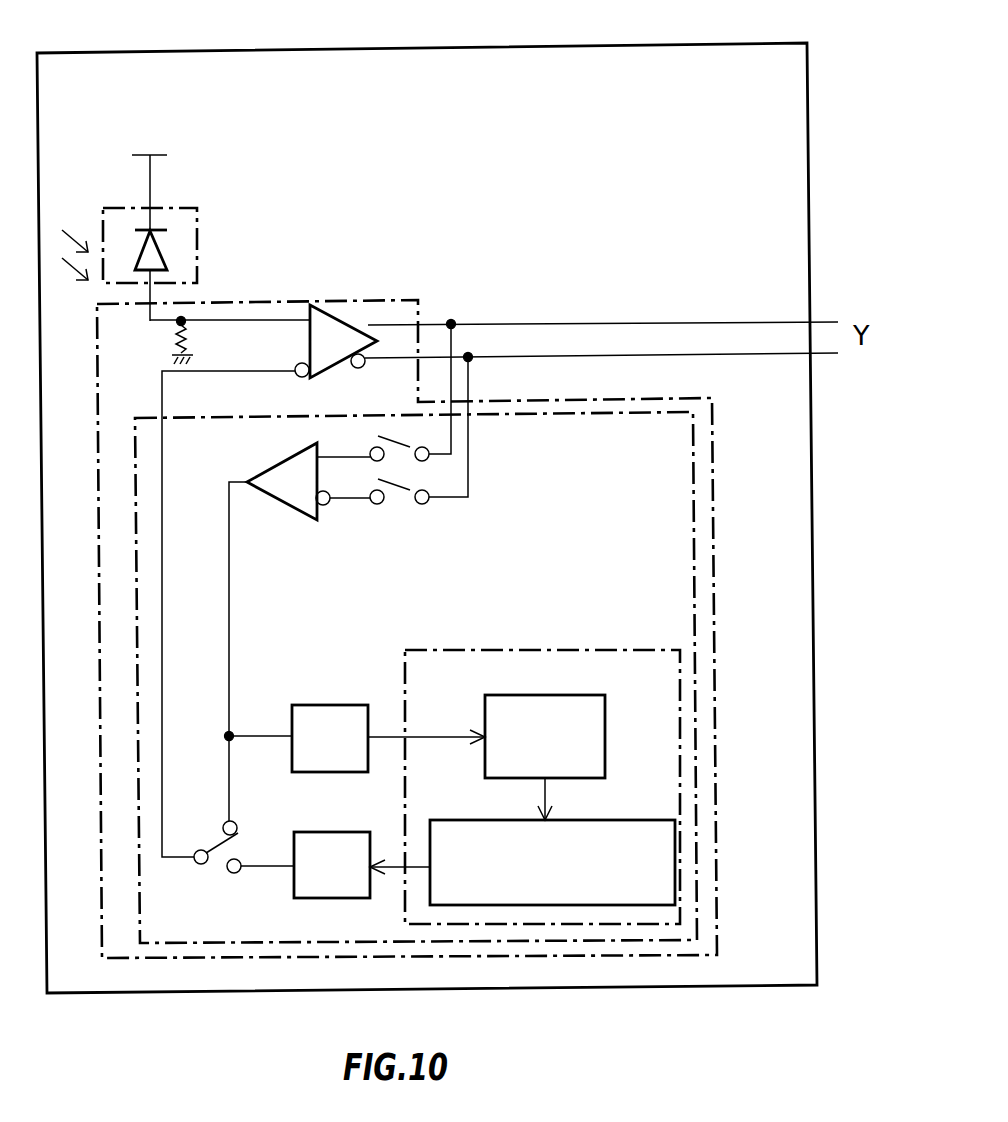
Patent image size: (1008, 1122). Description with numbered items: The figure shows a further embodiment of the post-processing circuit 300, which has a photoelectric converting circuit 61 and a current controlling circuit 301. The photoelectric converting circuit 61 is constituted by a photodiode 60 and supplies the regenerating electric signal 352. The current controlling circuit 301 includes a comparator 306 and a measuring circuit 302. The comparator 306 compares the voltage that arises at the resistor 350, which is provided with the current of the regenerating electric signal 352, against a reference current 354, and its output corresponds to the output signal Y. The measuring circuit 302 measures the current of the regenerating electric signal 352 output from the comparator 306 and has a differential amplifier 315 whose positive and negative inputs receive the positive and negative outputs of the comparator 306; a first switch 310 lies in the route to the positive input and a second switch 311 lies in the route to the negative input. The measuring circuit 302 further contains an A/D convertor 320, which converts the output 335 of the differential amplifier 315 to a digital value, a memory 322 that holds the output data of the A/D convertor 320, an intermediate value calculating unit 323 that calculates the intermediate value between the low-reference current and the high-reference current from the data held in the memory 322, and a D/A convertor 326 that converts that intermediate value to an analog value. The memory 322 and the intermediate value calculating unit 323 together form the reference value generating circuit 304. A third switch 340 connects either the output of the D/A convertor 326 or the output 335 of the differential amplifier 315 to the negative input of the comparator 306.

The post-processing circuit 300 is at (660, 43).
The photoelectric converting circuit 61 is at (190, 208).
The photodiode 60 is at (165, 258).
The current controlling circuit 301 is at (282, 297).
The regenerating electric signal 352 is at (148, 322).
The resistor 350 is at (188, 338).
The reference current 354 is at (173, 372).
The comparator 306 is at (330, 370).
The first switch 310 is at (428, 440).
The second switch 311 is at (393, 500).
The measuring circuit 302 is at (690, 427).
The differential amplifier 315 is at (283, 505).
The output of the differential amplifier 335 is at (228, 637).
The A/D convertor 320 is at (307, 703).
The reference value generating circuit 304 is at (493, 648).
The memory 322 is at (607, 715).
The intermediate value calculating unit 323 is at (627, 818).
The D/A convertor 326 is at (305, 832).
The third switch 340 is at (218, 868).